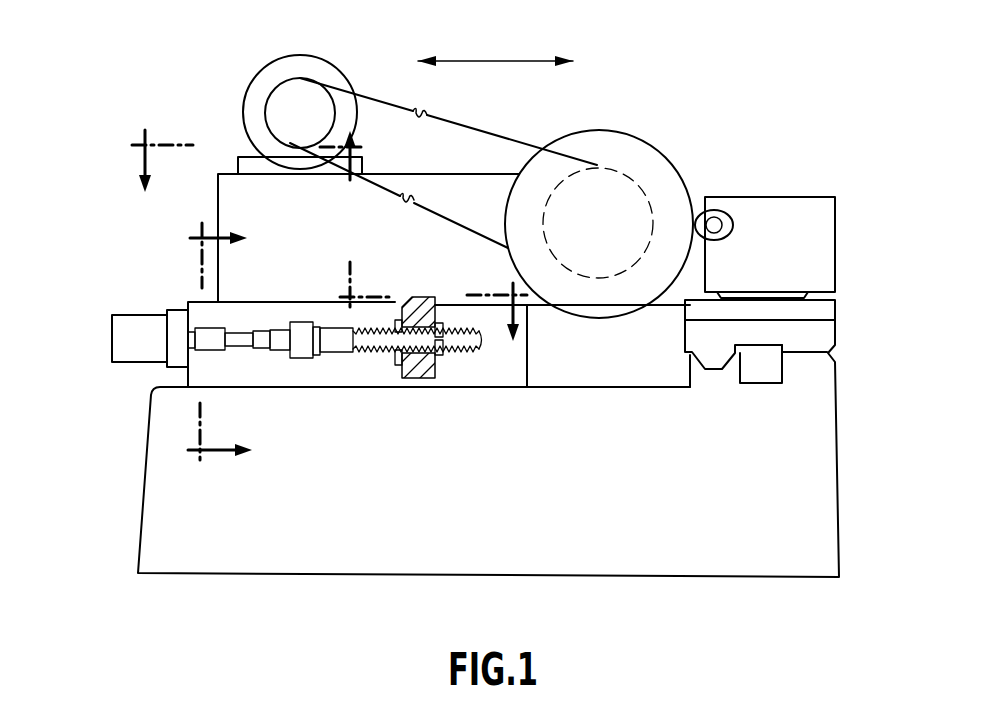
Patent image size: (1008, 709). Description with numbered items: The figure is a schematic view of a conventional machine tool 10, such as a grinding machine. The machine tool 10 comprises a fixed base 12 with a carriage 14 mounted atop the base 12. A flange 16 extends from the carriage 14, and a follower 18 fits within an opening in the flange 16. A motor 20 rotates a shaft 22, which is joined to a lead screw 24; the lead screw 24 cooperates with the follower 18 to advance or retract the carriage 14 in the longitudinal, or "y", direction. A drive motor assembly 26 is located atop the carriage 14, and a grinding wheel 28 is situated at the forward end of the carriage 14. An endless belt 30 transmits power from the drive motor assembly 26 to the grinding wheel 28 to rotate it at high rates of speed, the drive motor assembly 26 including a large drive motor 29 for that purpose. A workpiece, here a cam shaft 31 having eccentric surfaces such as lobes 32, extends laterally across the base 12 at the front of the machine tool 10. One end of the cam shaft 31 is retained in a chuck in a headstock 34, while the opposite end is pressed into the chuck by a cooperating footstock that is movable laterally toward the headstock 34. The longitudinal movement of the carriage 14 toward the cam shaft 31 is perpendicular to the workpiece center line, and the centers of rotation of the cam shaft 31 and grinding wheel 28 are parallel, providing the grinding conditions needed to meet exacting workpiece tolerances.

The machine tool 10 is at (150, 276).
The fixed base 12 is at (810, 527).
The carriage 14 is at (243, 193).
The flange 16 is at (423, 378).
The follower 18 is at (443, 357).
The motor 20 is at (132, 352).
The shaft 22 is at (300, 360).
The lead screw 24 is at (455, 337).
The drive motor assembly 26 is at (303, 114).
The grinding wheel 28 is at (633, 162).
The drive motor 29 is at (275, 75).
The endless belt 30 is at (497, 134).
The cam shaft 31 is at (721, 218).
The lobes 32 is at (702, 214).
The headstock 34 is at (817, 257).